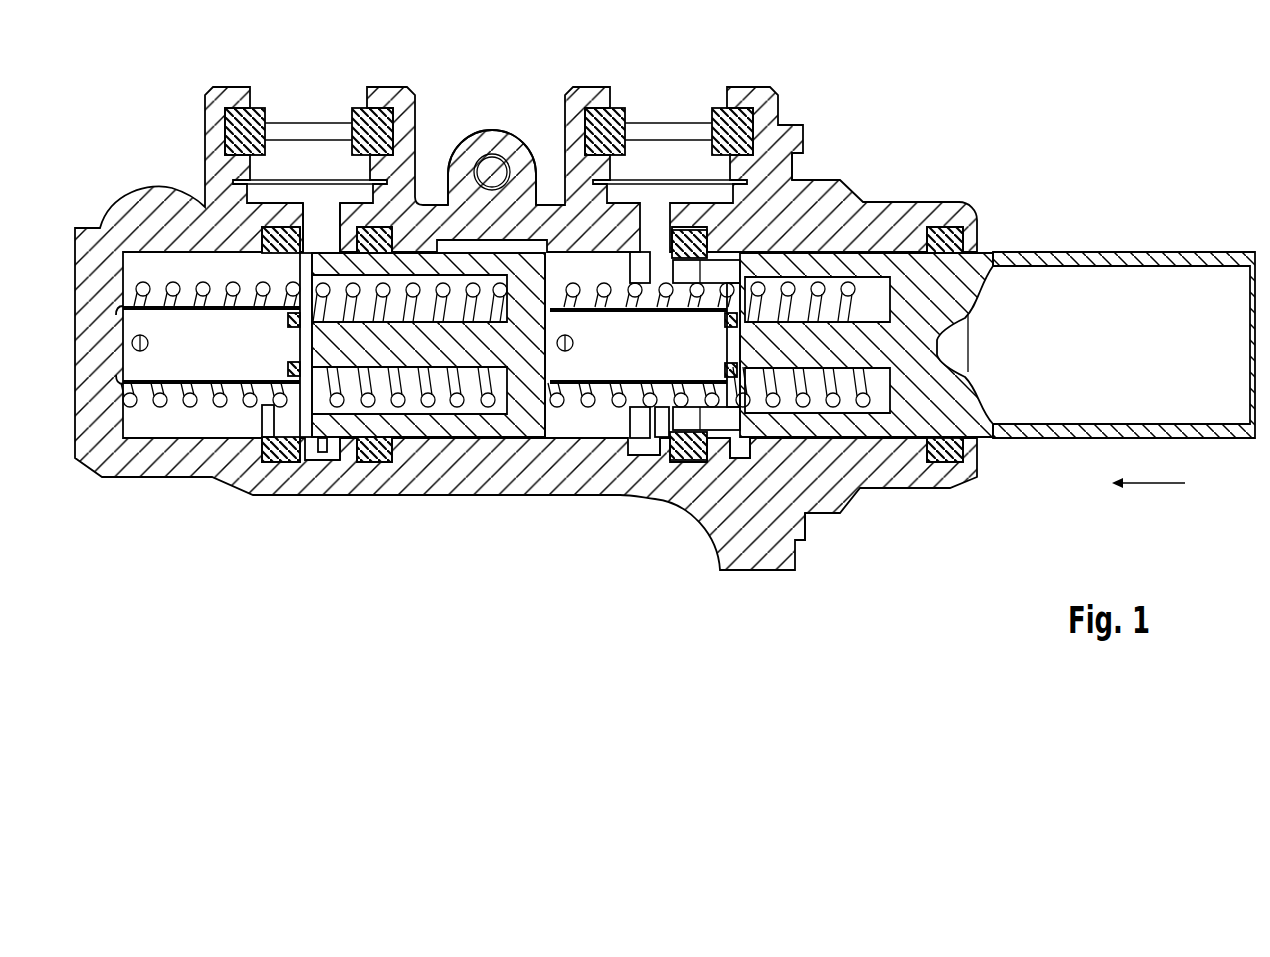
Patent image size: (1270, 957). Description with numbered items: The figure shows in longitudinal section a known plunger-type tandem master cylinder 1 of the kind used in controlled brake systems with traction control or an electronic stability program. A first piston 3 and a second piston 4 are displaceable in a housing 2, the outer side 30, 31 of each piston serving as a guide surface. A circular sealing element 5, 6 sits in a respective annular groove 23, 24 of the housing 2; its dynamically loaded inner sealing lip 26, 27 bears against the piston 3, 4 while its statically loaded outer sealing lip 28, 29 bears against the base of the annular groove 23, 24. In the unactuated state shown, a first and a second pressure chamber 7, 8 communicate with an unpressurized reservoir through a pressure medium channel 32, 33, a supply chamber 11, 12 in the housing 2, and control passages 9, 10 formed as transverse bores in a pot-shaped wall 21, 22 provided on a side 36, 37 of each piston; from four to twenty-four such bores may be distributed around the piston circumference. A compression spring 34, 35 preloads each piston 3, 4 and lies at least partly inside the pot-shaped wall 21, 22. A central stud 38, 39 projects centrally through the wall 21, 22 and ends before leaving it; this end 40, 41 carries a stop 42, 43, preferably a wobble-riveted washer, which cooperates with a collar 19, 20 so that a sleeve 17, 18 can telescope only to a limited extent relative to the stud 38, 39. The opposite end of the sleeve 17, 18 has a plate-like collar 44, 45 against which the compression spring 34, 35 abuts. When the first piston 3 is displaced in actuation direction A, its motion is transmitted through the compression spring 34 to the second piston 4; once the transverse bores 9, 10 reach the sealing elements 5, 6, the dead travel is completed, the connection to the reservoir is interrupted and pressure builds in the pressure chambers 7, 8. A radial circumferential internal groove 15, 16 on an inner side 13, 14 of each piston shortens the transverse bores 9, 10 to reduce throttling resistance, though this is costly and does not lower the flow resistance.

The master cylinder 1 is at (958, 150).
The housing 2 is at (138, 228).
The first piston 3 is at (1150, 260).
The second piston 4 is at (418, 262).
The sealing element 5 is at (693, 228).
The sealing element 6 is at (289, 222).
The first pressure chamber 7 is at (566, 430).
The second pressure chamber 8 is at (185, 425).
The control passage 9 is at (741, 445).
The control passage 10 is at (312, 455).
The supply chamber 11 is at (766, 428).
The supply chamber 12 is at (326, 452).
The inner side 13 is at (858, 398).
The inner side 14 is at (456, 378).
The internal groove 15 is at (798, 177).
The internal groove 16 is at (333, 245).
The sleeve 17 is at (590, 303).
The sleeve 18 is at (168, 415).
The collar 19 is at (806, 523).
The collar 20 is at (346, 458).
The pot-shaped wall 21 is at (808, 428).
The pot-shaped wall 22 is at (400, 428).
The annular groove 23 is at (690, 444).
The annular groove 24 is at (276, 460).
The inner sealing lip 26 is at (665, 443).
The inner sealing lip 27 is at (272, 468).
The outer sealing lip 28 is at (700, 456).
The outer sealing lip 29 is at (283, 462).
The outer side 30 is at (1011, 249).
The outer side 31 is at (506, 242).
The pressure medium channel 32 is at (722, 210).
The pressure medium channel 33 is at (320, 222).
The compression spring 34 is at (852, 288).
The compression spring 35 is at (173, 284).
The side 36 is at (662, 418).
The side 37 is at (252, 420).
The central stud 38 is at (805, 325).
The central stud 39 is at (418, 412).
The end 40 is at (708, 363).
The end 41 is at (276, 363).
The stop 42 is at (720, 320).
The stop 43 is at (287, 320).
The plate-like collar 44 is at (527, 428).
The plate-like collar 45 is at (124, 297).